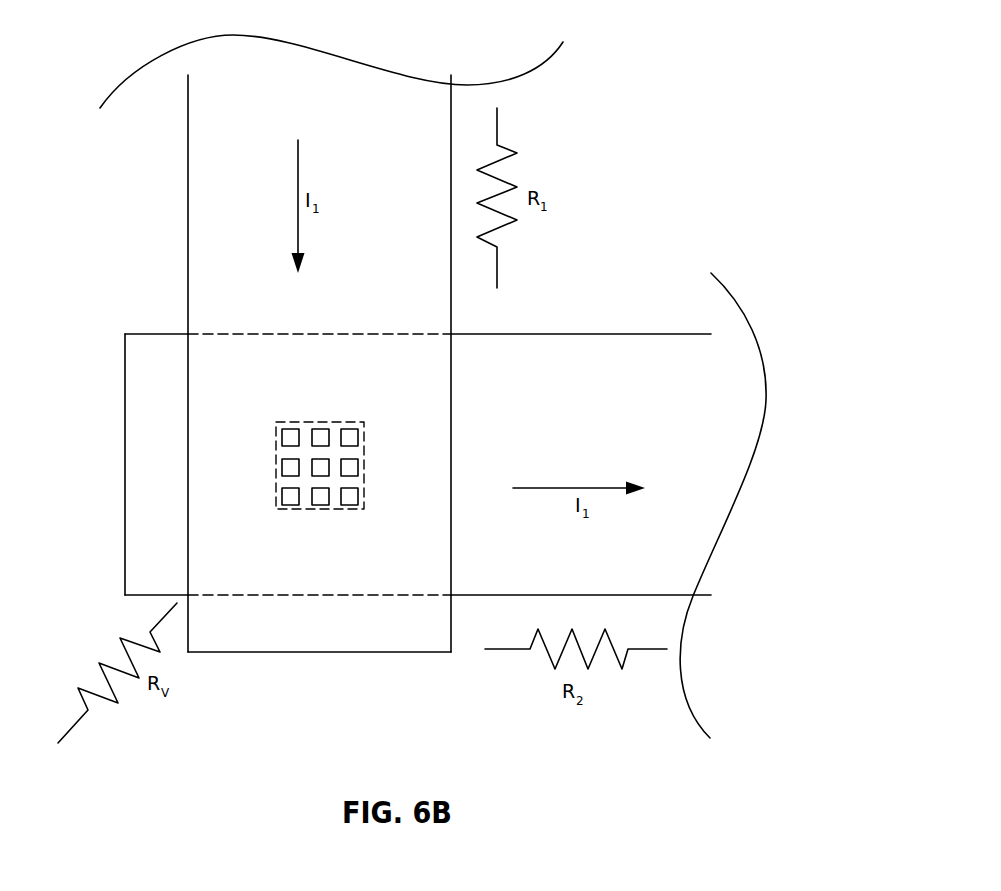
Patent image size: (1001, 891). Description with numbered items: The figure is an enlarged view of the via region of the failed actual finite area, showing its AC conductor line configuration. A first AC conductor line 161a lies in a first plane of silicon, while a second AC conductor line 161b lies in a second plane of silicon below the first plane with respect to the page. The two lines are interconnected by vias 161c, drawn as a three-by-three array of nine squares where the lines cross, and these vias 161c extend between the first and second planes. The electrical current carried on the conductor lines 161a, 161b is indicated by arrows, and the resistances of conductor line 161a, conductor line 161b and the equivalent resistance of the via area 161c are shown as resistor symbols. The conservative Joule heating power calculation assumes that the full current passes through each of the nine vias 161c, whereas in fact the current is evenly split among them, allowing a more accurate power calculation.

The AC conductor line 161a is at (188, 222).
The AC conductor line 161b is at (530, 334).
The vias 161c is at (349, 429).